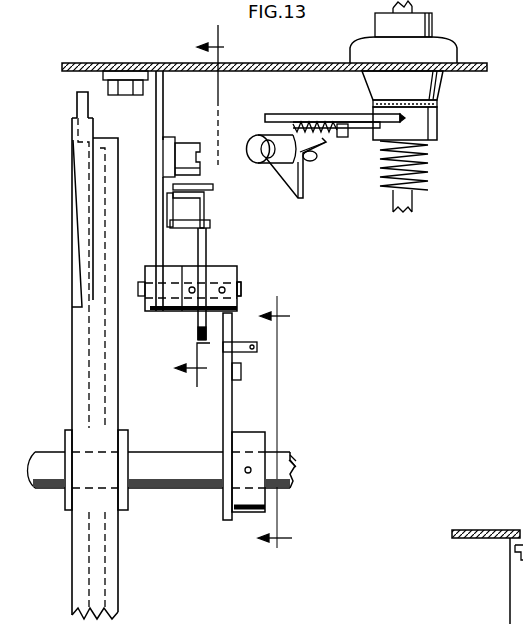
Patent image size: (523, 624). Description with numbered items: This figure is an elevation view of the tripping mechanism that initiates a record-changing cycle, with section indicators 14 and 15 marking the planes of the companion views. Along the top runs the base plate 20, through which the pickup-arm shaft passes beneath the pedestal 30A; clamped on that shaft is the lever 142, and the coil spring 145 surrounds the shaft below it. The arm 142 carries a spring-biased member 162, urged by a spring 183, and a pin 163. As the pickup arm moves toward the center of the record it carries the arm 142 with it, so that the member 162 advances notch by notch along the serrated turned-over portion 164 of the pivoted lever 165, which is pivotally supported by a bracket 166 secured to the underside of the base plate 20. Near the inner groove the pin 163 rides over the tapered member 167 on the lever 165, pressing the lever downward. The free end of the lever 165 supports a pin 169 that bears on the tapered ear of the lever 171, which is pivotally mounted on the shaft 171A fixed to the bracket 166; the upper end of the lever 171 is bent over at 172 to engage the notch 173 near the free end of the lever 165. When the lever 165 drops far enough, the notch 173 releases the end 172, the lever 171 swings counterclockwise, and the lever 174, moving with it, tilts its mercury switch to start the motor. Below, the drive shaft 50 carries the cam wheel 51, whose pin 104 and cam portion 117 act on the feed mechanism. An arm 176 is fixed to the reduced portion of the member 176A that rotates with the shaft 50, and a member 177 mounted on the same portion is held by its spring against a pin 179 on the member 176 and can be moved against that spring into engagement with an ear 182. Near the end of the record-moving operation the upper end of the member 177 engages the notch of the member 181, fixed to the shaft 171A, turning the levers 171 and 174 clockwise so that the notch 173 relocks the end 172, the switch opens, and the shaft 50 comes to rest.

The base plate 20 is at (265, 63).
The pedestal 30A is at (440, 50).
The lever 142 is at (423, 118).
The coil spring 145 is at (430, 170).
The pin 163 is at (252, 140).
The spring 183 is at (324, 146).
The spring-biased member 162 is at (300, 192).
The bracket 166 is at (157, 105).
The pivoted lever 165 is at (185, 191).
The tapered member 167 is at (158, 160).
The bent-over upper end 172 is at (170, 195).
The turned-over portion 164 is at (213, 188).
The pin 169 is at (210, 224).
The lever 171 is at (206, 247).
The member 181 is at (238, 274).
The shaft 171A is at (241, 290).
The lever 174 is at (198, 333).
The arm 176 is at (224, 400).
The pin 179 is at (246, 350).
The ear 182 is at (241, 373).
The member 177 is at (235, 413).
The member 176A is at (265, 500).
The shaft 50 is at (190, 479).
The cam wheel 51 is at (78, 550).
The pin 104 is at (78, 97).
The cam portion 117 is at (80, 305).
The notch 173 is at (512, 604).
The section line 14- 14 is at (185, 206).
The section line 15- 15 is at (288, 424).